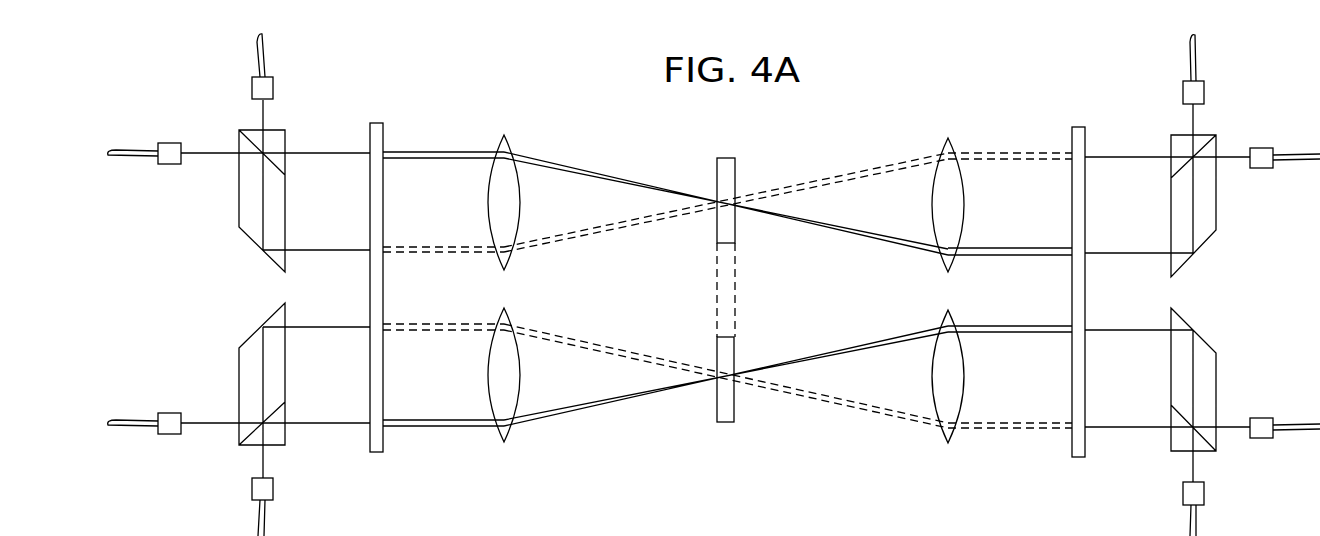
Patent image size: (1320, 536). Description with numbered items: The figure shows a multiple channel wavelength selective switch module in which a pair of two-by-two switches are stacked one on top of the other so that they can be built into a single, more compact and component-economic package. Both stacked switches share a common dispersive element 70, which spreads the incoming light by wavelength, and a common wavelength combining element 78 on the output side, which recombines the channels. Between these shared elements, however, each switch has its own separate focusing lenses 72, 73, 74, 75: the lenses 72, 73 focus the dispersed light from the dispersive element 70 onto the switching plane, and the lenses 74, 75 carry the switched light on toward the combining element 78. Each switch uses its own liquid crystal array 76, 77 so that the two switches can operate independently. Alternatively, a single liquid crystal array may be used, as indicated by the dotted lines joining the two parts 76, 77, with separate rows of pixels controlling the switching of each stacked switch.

The common dispersive element 70 is at (376, 452).
The focusing lens 72 is at (504, 440).
The focusing lens 73 is at (506, 137).
The focusing lens 74 is at (948, 440).
The focusing lens 75 is at (950, 137).
The liquid crystal array 76 is at (724, 422).
The liquid crystal array 77 is at (727, 165).
The common wavelength combining element 78 is at (1075, 457).